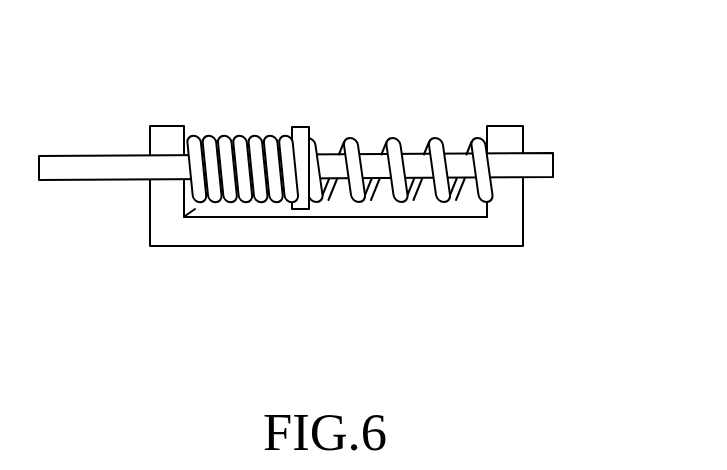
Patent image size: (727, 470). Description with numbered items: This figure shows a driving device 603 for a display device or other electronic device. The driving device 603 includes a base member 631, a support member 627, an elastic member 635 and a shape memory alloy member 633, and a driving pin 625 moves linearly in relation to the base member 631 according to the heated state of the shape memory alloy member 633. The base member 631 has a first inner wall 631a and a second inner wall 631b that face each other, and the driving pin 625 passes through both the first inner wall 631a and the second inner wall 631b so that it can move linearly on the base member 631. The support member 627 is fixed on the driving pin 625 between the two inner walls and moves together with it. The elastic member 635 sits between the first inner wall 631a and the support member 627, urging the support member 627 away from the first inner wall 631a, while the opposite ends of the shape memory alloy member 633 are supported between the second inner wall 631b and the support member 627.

The driving device 603 is at (345, 183).
The driving pin 625 is at (540, 160).
The support member 627 is at (298, 127).
The base member 631 is at (277, 232).
The first inner wall 631a is at (483, 207).
The second inner wall 631b is at (190, 215).
The shape memory alloy member 633 is at (233, 135).
The elastic member 635 is at (428, 135).